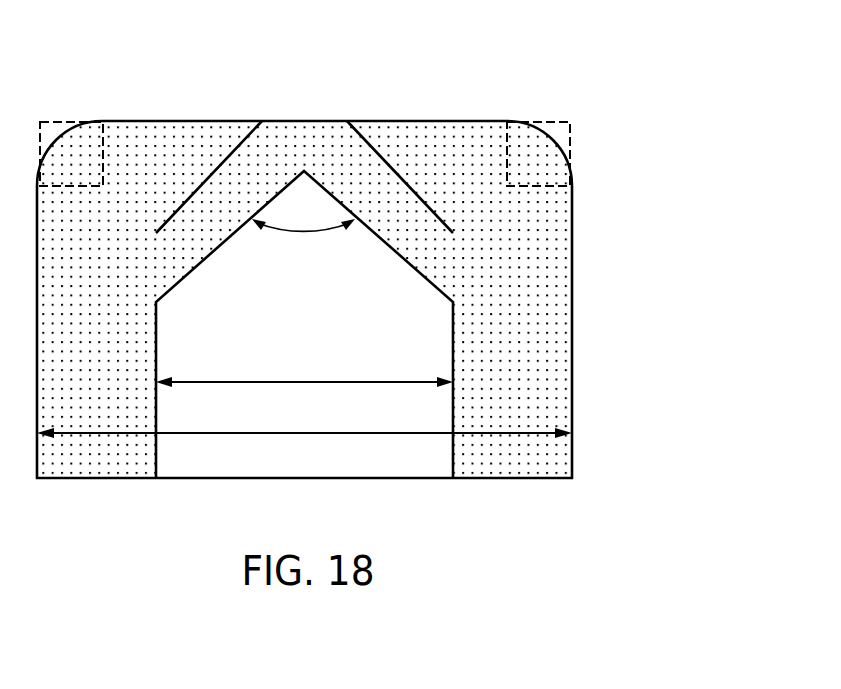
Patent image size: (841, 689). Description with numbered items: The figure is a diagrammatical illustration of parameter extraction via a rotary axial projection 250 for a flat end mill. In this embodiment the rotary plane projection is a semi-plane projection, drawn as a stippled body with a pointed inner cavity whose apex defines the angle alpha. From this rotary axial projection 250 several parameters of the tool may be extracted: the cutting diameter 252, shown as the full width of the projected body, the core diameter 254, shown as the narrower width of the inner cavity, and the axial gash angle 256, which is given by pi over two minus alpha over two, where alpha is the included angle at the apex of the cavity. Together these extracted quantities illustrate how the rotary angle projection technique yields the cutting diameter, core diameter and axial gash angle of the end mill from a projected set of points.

The rotary axial projection 250 is at (590, 51).
The cutting diameter (D1) 252 is at (405, 435).
The core diameter (D2) 254 is at (397, 381).
The axial gash angle 256 is at (328, 228).